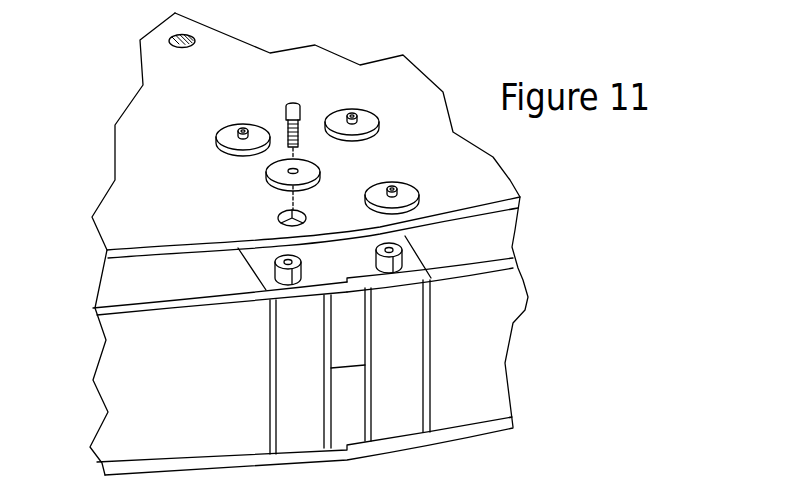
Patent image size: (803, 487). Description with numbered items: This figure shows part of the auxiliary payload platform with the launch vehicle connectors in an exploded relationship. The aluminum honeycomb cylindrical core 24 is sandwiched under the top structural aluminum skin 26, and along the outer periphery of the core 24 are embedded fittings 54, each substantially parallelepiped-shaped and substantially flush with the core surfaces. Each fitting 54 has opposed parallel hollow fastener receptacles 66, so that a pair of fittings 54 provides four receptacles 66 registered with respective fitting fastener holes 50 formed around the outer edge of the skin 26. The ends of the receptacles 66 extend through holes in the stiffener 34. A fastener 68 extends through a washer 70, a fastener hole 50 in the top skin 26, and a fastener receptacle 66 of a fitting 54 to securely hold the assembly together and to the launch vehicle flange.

The top structural aluminum skin 26 is at (138, 153).
The fastener 68 is at (300, 140).
The washer 70 is at (270, 173).
The fitting fastener hole 50 is at (280, 217).
The stiffener 34 is at (257, 267).
The fastener receptacle 66 is at (413, 247).
The aluminum honeycomb cylindrical core 24 is at (493, 303).
The fitting 54 is at (287, 343).